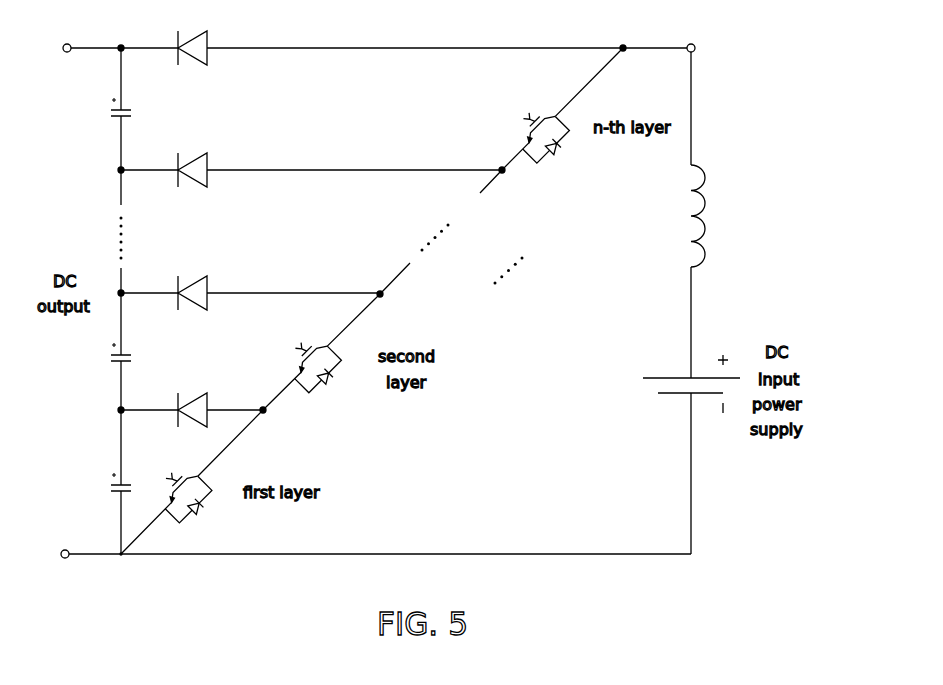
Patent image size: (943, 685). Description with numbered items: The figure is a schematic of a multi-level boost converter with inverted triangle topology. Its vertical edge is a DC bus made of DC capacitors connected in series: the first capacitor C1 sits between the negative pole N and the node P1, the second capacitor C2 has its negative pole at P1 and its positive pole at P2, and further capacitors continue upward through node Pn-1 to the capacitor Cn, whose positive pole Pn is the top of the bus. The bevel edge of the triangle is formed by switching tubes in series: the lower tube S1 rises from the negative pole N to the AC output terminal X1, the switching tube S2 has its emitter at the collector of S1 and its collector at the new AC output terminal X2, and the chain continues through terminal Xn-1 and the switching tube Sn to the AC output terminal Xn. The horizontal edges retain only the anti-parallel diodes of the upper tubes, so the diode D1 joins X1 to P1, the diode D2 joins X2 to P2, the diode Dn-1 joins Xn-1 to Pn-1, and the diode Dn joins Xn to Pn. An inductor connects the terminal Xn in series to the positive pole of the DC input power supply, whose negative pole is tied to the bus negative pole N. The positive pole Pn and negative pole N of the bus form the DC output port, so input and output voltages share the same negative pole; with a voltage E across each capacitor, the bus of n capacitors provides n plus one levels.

The positive pole of the DC bus Pn is at (110, 39).
The DC bus node Pn-1 is at (105, 174).
The positive pole of the second capacitor P2 is at (110, 296).
The positive pole of the first capacitor P1 is at (110, 414).
The negative pole of the DC bus N is at (110, 564).
The AC output terminal Xn is at (632, 63).
The AC output terminal Xn-1 is at (520, 179).
The AC output terminal X2 is at (393, 301).
The AC output terminal X1 is at (277, 413).
The anti-parallel diode Dn is at (212, 57).
The anti-parallel diode Dn-1 is at (218, 178).
The anti-parallel diode D2 is at (212, 301).
The anti-parallel diode D1 is at (207, 416).
The DC capacitor Cn is at (112, 114).
The second capacitor C2 is at (112, 360).
The first capacitor C1 is at (112, 490).
The switching tube Sn is at (562, 109).
The switching tube S2 is at (321, 352).
The lower tube S1 is at (192, 482).